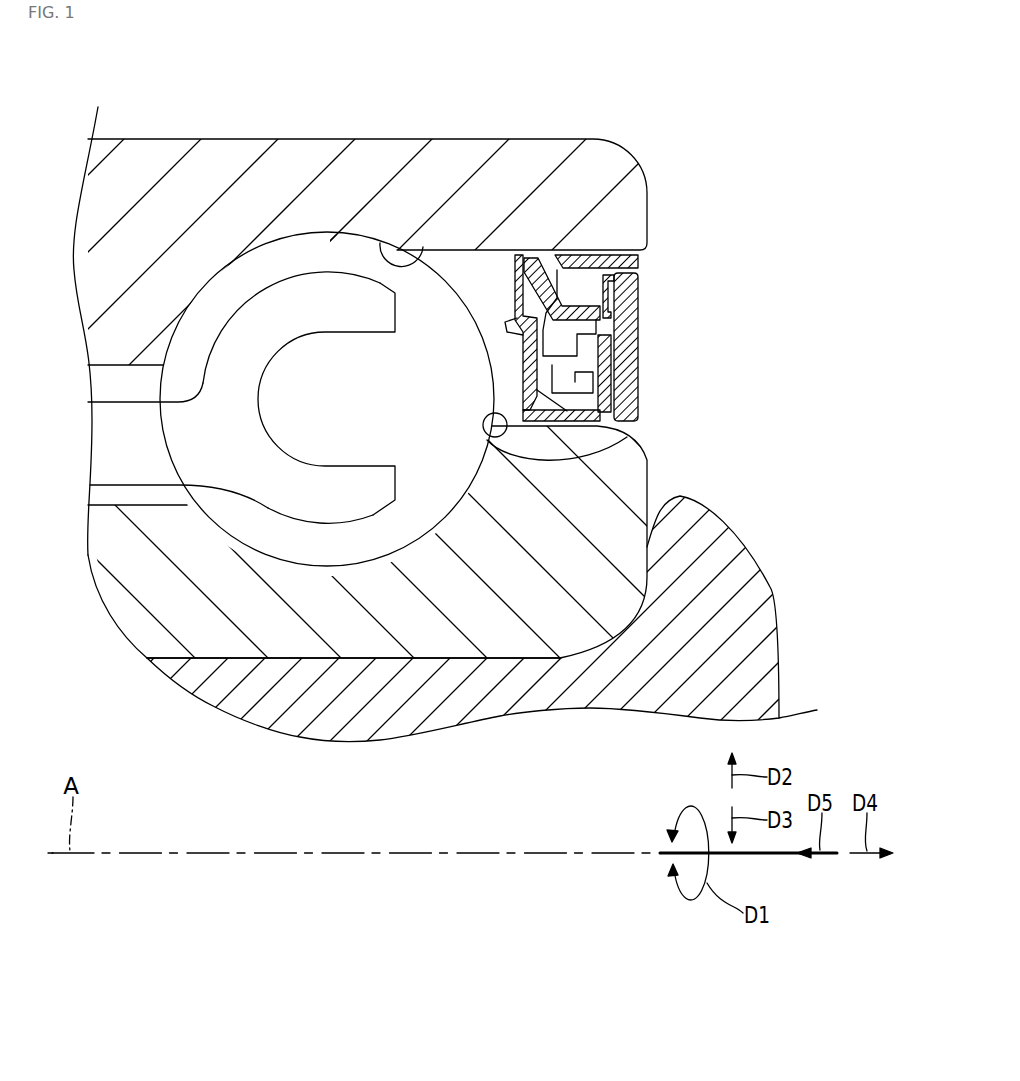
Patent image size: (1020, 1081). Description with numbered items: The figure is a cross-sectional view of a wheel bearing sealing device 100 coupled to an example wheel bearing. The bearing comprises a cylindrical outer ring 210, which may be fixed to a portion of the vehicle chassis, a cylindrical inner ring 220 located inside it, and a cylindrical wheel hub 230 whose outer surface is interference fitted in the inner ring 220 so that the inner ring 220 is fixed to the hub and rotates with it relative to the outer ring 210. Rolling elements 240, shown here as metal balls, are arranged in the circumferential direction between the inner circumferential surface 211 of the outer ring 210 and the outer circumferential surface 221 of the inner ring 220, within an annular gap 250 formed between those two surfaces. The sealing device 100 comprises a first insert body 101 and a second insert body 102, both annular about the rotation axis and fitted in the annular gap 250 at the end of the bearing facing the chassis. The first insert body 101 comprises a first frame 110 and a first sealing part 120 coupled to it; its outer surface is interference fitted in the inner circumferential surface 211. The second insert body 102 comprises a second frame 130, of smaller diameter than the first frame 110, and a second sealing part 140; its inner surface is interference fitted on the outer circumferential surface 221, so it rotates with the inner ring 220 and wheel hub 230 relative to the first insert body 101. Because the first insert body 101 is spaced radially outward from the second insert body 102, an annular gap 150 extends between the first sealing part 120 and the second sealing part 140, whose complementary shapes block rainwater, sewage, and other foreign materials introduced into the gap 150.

The sealing device 100 is at (616, 248).
The first insert body 101 is at (502, 268).
The second insert body 102 is at (650, 360).
The first frame 110 is at (533, 257).
The first sealing part 120 is at (553, 250).
The second frame 130 is at (632, 428).
The second sealing part 140 is at (633, 338).
The gap 150 is at (650, 270).
The outer ring 210 is at (267, 160).
The inner circumferential surface 211 is at (381, 243).
The inner ring 220 is at (627, 542).
The outer circumferential surface 221 is at (597, 428).
The wheel hub 230 is at (257, 712).
The rolling elements 240 is at (218, 298).
The annular gap 250 is at (473, 303).